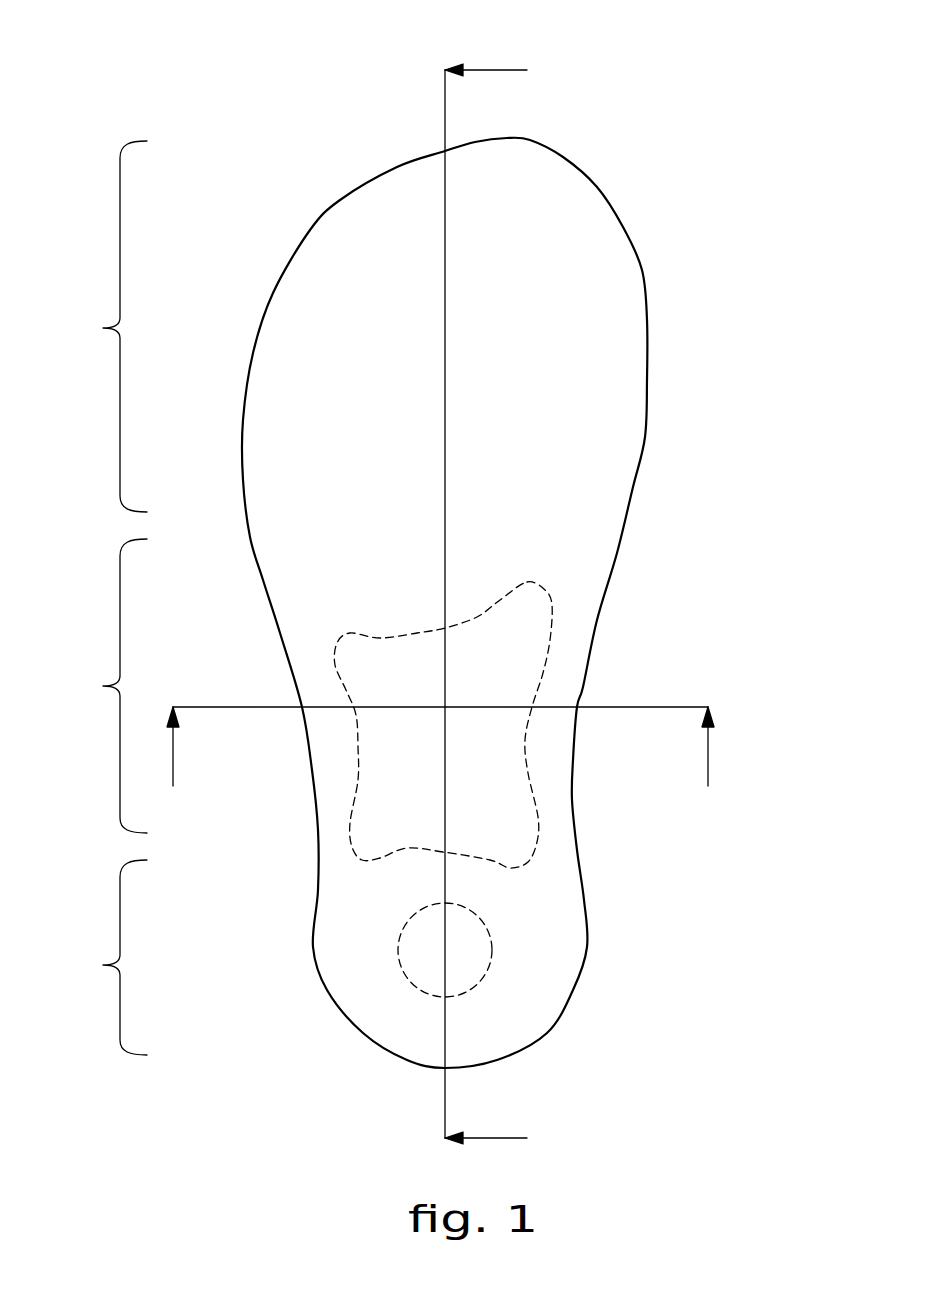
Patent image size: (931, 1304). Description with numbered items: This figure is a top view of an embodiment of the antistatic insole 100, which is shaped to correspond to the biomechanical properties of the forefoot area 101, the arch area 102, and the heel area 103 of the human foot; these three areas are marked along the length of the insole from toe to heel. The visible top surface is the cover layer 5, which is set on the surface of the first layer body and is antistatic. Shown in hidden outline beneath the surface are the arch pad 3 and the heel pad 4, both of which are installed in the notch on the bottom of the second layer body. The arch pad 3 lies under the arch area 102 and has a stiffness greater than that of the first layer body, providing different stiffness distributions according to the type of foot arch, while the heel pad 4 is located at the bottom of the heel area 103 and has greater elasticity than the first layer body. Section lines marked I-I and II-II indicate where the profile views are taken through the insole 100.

The antistatic insole 100 is at (48, 62).
The forefoot area 101 is at (98, 326).
The arch area 102 is at (98, 686).
The heel area 103 is at (98, 957).
The arch pad 3 is at (518, 828).
The heel pad 4 is at (484, 962).
The cover layer 5 is at (603, 205).